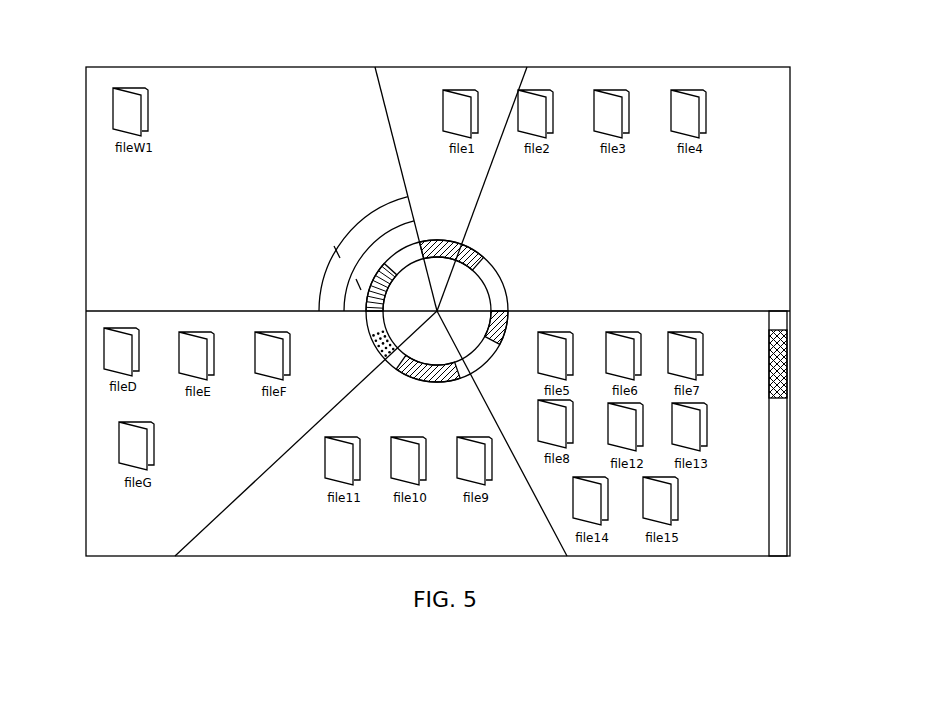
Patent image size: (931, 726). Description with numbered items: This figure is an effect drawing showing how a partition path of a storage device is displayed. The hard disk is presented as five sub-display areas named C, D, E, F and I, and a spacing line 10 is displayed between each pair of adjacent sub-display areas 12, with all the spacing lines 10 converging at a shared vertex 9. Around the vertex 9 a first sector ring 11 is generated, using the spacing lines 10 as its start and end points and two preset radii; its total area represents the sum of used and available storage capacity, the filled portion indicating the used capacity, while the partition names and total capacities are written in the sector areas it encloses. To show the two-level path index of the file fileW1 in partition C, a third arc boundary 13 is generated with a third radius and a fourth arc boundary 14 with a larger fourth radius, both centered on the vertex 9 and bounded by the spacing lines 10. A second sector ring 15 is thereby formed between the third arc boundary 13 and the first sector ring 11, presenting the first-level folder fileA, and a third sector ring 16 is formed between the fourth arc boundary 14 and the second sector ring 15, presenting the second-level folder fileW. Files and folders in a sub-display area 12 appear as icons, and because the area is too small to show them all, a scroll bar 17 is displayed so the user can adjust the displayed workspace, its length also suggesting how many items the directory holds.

The vertex 9 is at (527, 67).
The spacing line 10 is at (387, 108).
The first sector ring 11 is at (372, 292).
The sub-display area 12 is at (732, 498).
The third arc boundary 13 is at (393, 223).
The fourth arc boundary 14 is at (355, 217).
The second sector ring 15 is at (358, 280).
The third sector ring 16 is at (338, 253).
The scroll bar 17 is at (780, 428).